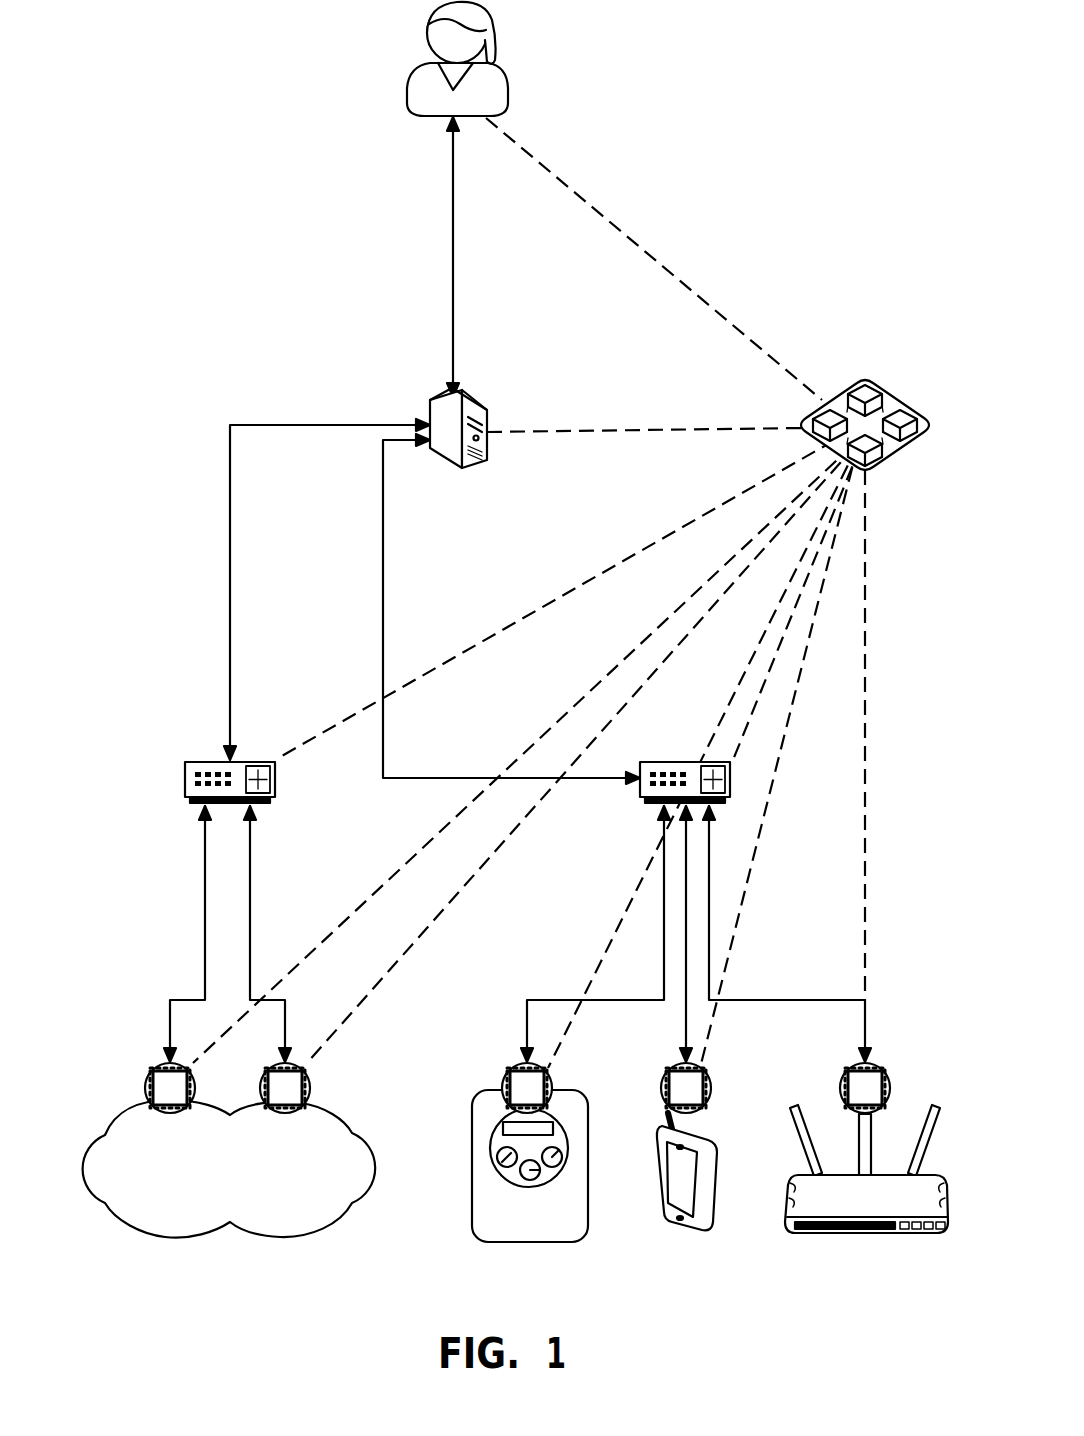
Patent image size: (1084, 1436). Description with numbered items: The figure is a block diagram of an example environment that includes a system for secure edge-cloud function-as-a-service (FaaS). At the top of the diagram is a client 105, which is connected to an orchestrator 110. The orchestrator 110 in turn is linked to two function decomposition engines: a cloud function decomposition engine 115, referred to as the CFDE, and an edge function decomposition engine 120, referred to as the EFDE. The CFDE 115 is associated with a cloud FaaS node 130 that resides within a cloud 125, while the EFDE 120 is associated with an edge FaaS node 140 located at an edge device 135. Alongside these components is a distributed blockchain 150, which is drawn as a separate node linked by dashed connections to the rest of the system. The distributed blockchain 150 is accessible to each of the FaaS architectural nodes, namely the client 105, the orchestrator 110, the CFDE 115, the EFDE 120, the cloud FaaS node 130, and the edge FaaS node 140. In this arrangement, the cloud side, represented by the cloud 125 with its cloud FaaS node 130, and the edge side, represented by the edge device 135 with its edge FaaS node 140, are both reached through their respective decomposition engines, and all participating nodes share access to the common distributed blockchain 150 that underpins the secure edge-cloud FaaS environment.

The client 105 is at (407, 80).
The orchestrator 110 is at (443, 396).
The cloud function decomposition engine 115 is at (193, 761).
The edge function decomposition engine 120 is at (697, 761).
The cloud 125 is at (170, 1242).
The cloud FaaS node 130 is at (168, 1115).
The edge device 135 is at (528, 1245).
The edge FaaS node 140 is at (507, 1072).
The distributed blockchain 150 is at (872, 383).